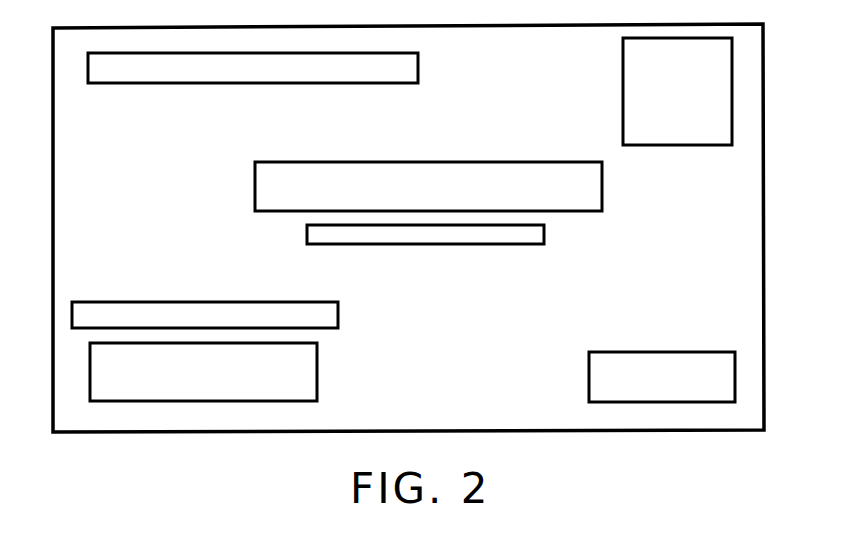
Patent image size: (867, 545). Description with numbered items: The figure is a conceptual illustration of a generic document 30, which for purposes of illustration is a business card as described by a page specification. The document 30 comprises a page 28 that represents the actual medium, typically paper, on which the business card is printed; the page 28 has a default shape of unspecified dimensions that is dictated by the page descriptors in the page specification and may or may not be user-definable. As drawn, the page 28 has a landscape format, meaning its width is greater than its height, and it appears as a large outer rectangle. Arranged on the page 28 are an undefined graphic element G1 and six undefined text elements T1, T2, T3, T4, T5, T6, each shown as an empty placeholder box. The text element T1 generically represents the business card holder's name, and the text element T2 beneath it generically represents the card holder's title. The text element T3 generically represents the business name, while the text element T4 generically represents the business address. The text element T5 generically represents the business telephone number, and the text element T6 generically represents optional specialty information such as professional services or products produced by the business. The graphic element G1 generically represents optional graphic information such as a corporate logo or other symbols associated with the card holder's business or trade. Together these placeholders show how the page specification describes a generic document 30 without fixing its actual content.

The page 28 is at (764, 196).
The generic document 30 is at (282, 449).
The text element T1 is at (255, 183).
The text element T2 is at (312, 238).
The text element T3 is at (338, 303).
The text element T4 is at (317, 378).
The text element T5 is at (615, 352).
The text element T6 is at (418, 68).
The graphic element G1 is at (623, 70).